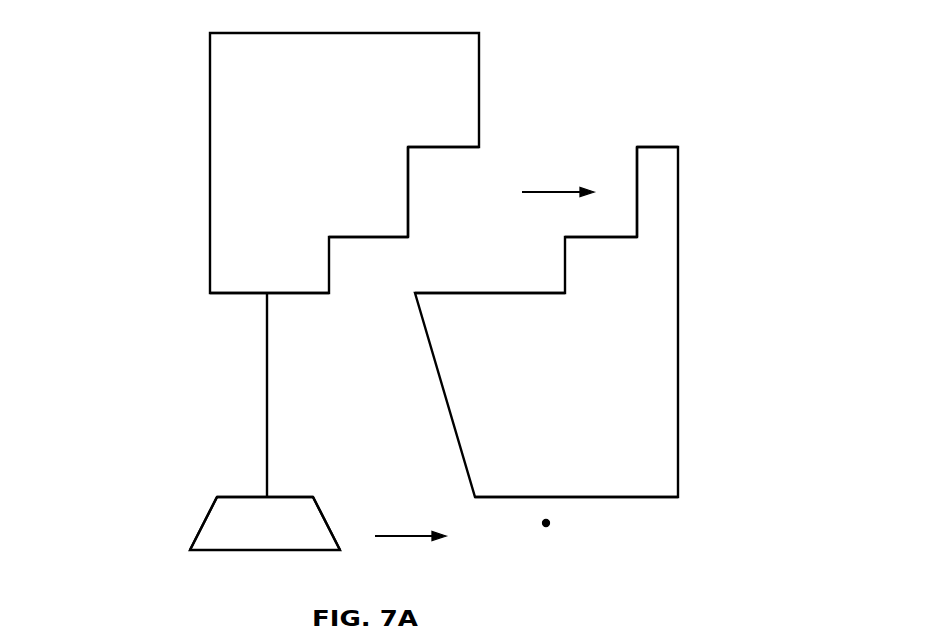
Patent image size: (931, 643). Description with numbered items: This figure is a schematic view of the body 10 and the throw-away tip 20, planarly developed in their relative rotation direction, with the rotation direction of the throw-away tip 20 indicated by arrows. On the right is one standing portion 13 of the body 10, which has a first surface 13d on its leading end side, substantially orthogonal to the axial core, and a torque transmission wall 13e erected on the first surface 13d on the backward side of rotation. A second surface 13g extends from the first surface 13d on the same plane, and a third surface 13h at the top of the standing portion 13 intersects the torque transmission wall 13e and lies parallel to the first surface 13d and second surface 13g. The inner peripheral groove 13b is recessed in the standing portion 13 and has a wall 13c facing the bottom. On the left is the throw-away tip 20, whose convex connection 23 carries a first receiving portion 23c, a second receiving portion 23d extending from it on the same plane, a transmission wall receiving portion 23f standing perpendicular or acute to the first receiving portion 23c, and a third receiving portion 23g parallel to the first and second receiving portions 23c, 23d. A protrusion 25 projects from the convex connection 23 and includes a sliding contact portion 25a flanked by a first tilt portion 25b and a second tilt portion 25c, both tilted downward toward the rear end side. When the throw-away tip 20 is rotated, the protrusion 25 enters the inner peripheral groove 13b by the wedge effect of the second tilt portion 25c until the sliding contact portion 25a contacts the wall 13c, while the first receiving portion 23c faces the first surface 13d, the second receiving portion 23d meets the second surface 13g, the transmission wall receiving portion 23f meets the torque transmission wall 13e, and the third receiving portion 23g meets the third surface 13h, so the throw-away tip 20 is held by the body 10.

The body 10 is at (752, 101).
The standing portion 13 is at (679, 205).
The inner peripheral groove 13b is at (549, 525).
The wall 13c is at (618, 497).
The first surface 13d is at (604, 237).
The torque transmission wall 13e is at (637, 201).
The second surface 13g is at (529, 293).
The third surface 13h is at (663, 147).
The throw-away tip 20 is at (149, 141).
The convex connection 23 is at (267, 368).
The first receiving portion 23c is at (378, 237).
The second receiving portion 23d is at (298, 293).
The transmission wall receiving portion 23f is at (408, 165).
The third receiving portion 23g is at (452, 147).
The protrusion 25 is at (210, 472).
The sliding contact portion 25a is at (292, 497).
The first tilt portion 25b is at (204, 522).
The second tilt portion 25c is at (327, 522).